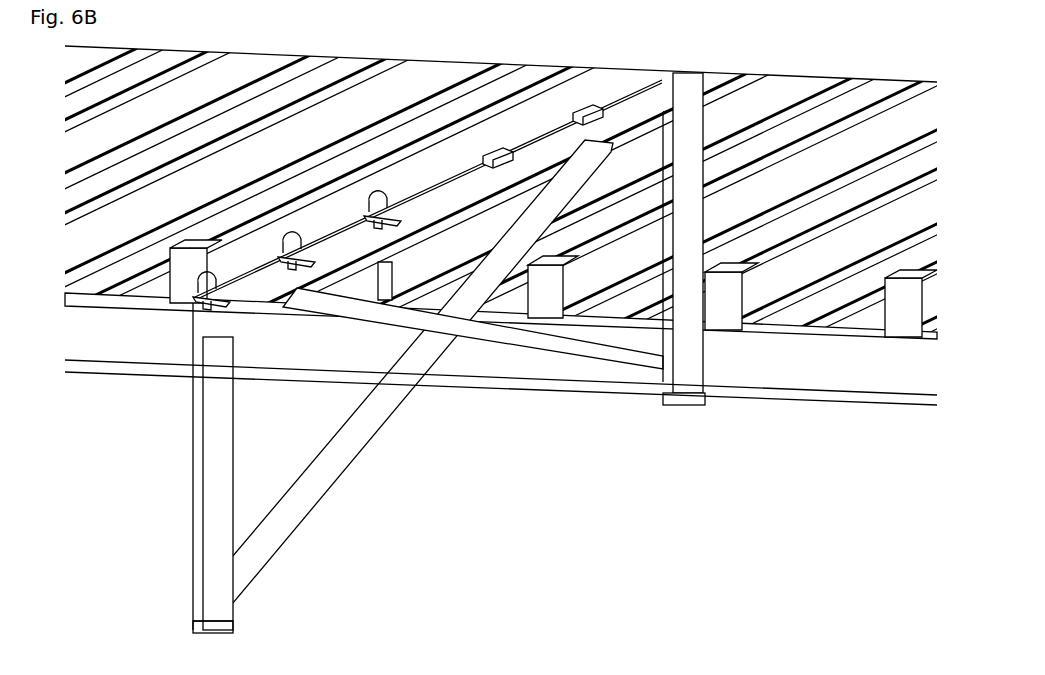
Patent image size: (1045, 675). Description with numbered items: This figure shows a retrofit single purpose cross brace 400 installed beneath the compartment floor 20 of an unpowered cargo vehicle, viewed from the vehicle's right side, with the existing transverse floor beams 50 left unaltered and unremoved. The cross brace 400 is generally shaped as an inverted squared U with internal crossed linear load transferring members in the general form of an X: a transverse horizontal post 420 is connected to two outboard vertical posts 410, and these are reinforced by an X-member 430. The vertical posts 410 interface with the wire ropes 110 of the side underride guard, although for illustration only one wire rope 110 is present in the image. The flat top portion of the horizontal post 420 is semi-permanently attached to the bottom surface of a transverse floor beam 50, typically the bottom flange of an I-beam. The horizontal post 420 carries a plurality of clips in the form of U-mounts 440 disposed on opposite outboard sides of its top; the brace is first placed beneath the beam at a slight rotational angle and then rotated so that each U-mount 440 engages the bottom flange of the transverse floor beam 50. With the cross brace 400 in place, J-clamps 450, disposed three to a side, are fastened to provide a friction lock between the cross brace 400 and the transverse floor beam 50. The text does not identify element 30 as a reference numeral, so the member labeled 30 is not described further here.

The compartment floor 20 is at (764, 143).
The purlin 30 is at (815, 75).
The transverse floor beam 50 is at (366, 100).
The wire rope 110 is at (548, 392).
The cross brace 400 is at (432, 330).
The vertical post 410 is at (213, 500).
The horizontal post 420 is at (609, 115).
The X-member 430 is at (307, 507).
The U-mount 440 is at (494, 150).
The J-clamp 450 is at (383, 200).